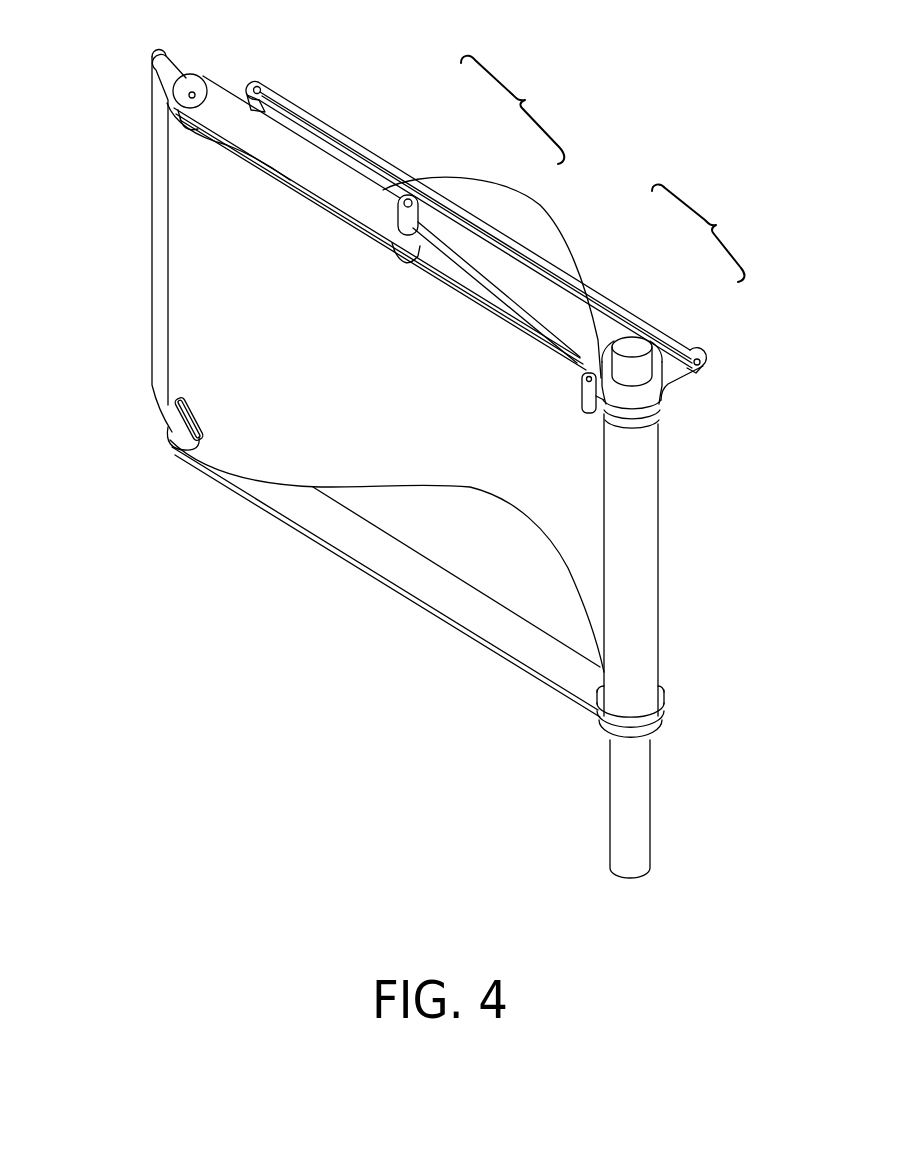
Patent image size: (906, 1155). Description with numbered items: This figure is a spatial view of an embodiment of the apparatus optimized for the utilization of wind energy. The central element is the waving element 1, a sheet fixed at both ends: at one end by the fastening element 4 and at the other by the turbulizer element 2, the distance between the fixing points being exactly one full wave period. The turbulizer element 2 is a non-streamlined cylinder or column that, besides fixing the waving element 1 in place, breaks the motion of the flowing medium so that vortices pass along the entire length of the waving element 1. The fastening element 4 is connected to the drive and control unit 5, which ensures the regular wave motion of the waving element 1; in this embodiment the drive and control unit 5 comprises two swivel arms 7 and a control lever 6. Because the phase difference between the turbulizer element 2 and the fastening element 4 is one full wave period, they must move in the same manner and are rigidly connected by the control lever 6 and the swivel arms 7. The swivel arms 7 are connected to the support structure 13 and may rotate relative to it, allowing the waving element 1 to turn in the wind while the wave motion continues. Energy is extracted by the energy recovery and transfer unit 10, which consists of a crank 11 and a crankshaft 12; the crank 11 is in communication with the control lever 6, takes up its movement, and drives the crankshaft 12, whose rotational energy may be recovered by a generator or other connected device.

The waving element 1 is at (290, 418).
The turbulizer element 2 is at (620, 553).
The fastening element 4 is at (160, 256).
The drive and control unit 5 is at (673, 306).
The control lever 6 is at (686, 352).
The swivel arm 7 is at (571, 331).
The energy recovery and transfer unit 10 is at (469, 212).
The crank 11 is at (405, 215).
The crankshaft 12 is at (413, 226).
The support structure 13 is at (633, 822).